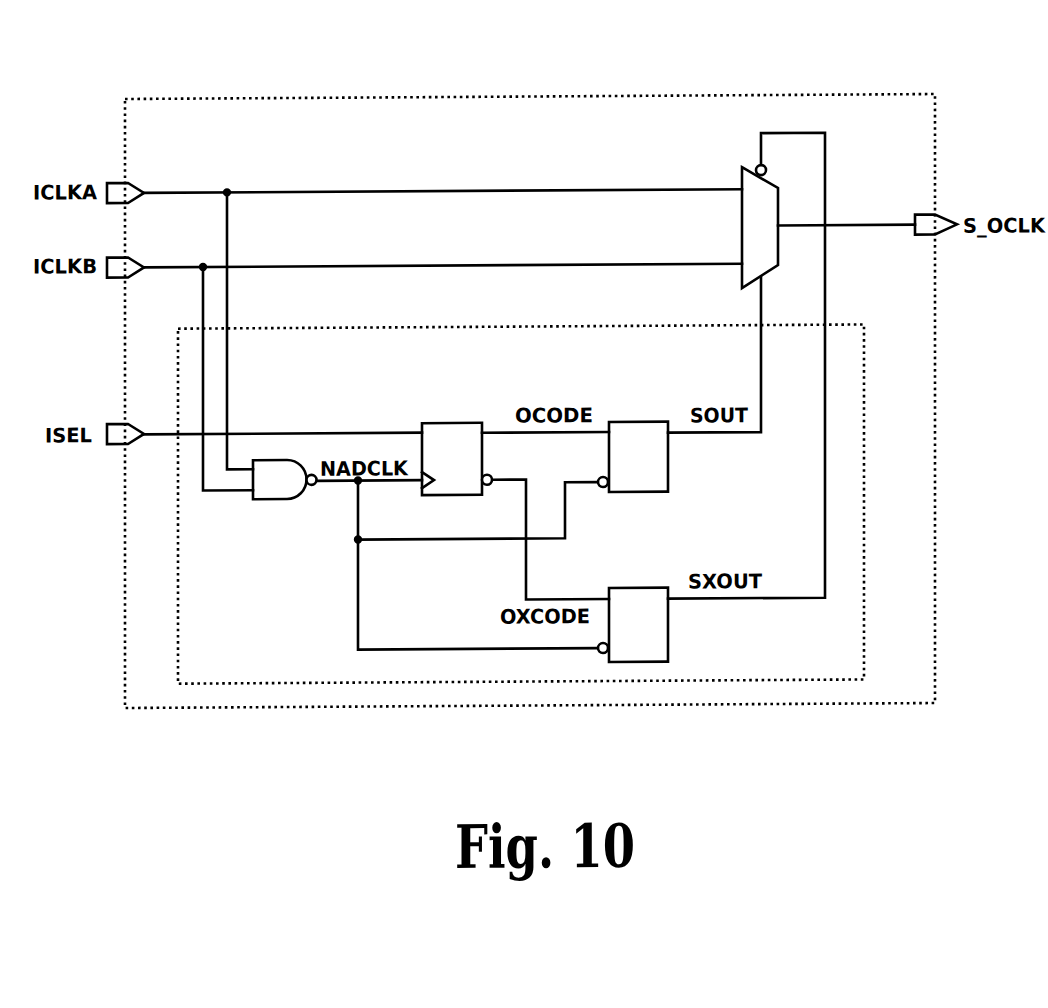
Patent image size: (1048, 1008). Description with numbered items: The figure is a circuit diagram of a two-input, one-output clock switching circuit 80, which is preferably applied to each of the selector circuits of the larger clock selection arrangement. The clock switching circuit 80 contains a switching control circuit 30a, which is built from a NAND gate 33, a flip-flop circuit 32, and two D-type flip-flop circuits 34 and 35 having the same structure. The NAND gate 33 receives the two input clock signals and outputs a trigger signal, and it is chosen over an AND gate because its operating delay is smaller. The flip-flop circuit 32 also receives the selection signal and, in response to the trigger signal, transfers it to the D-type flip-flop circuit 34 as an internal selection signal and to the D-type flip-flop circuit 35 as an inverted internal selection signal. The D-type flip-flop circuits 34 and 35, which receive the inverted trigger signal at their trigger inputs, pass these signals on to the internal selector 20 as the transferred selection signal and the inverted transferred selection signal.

The 2-input/1-output clock switching circuit 80 is at (213, 98).
The switching control circuit 30a is at (396, 328).
The internal selector 20 is at (738, 180).
The flip-flop circuit 32 is at (464, 424).
The NAND gate 33 is at (282, 503).
The D-type flip-flop circuit 34 is at (653, 423).
The D-type flip-flop circuit 35 is at (653, 590).